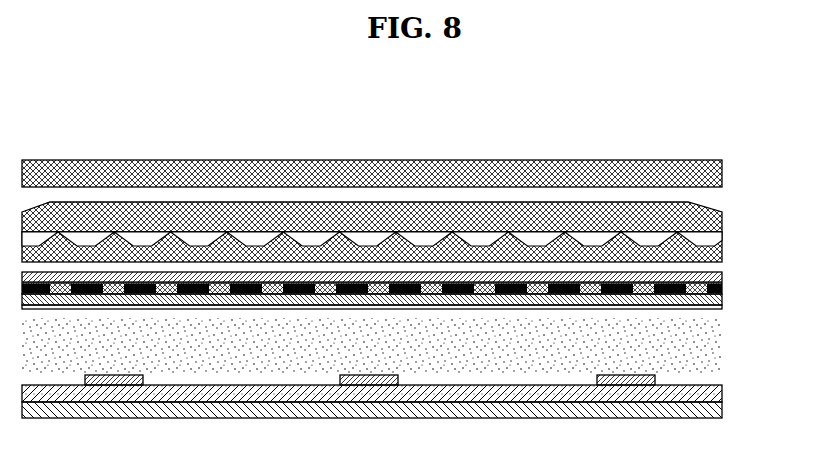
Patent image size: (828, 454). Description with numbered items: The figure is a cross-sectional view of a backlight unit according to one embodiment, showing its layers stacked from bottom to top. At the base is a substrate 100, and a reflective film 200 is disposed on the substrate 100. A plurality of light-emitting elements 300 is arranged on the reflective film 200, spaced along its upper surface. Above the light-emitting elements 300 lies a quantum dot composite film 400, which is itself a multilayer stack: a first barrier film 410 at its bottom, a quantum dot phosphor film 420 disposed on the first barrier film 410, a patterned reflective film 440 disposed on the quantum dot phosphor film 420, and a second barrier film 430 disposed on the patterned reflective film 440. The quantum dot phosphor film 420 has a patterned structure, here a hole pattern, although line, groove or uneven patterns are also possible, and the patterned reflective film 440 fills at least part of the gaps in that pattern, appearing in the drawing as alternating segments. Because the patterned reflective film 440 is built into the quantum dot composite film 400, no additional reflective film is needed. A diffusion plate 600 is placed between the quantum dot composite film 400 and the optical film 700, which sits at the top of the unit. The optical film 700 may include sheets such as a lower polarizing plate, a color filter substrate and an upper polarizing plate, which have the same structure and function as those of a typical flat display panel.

The substrate 100 is at (705, 412).
The reflective film 200 is at (705, 398).
The light-emitting elements 300 is at (655, 380).
The quantum dot composite film 400 is at (415, 299).
The first barrier film 410 is at (722, 302).
The quantum dot phosphor film 420 is at (395, 321).
The second barrier film 430 is at (722, 277).
The patterned reflective film 440 is at (722, 289).
The diffusion plate 600 is at (724, 318).
The optical film 700 is at (735, 160).